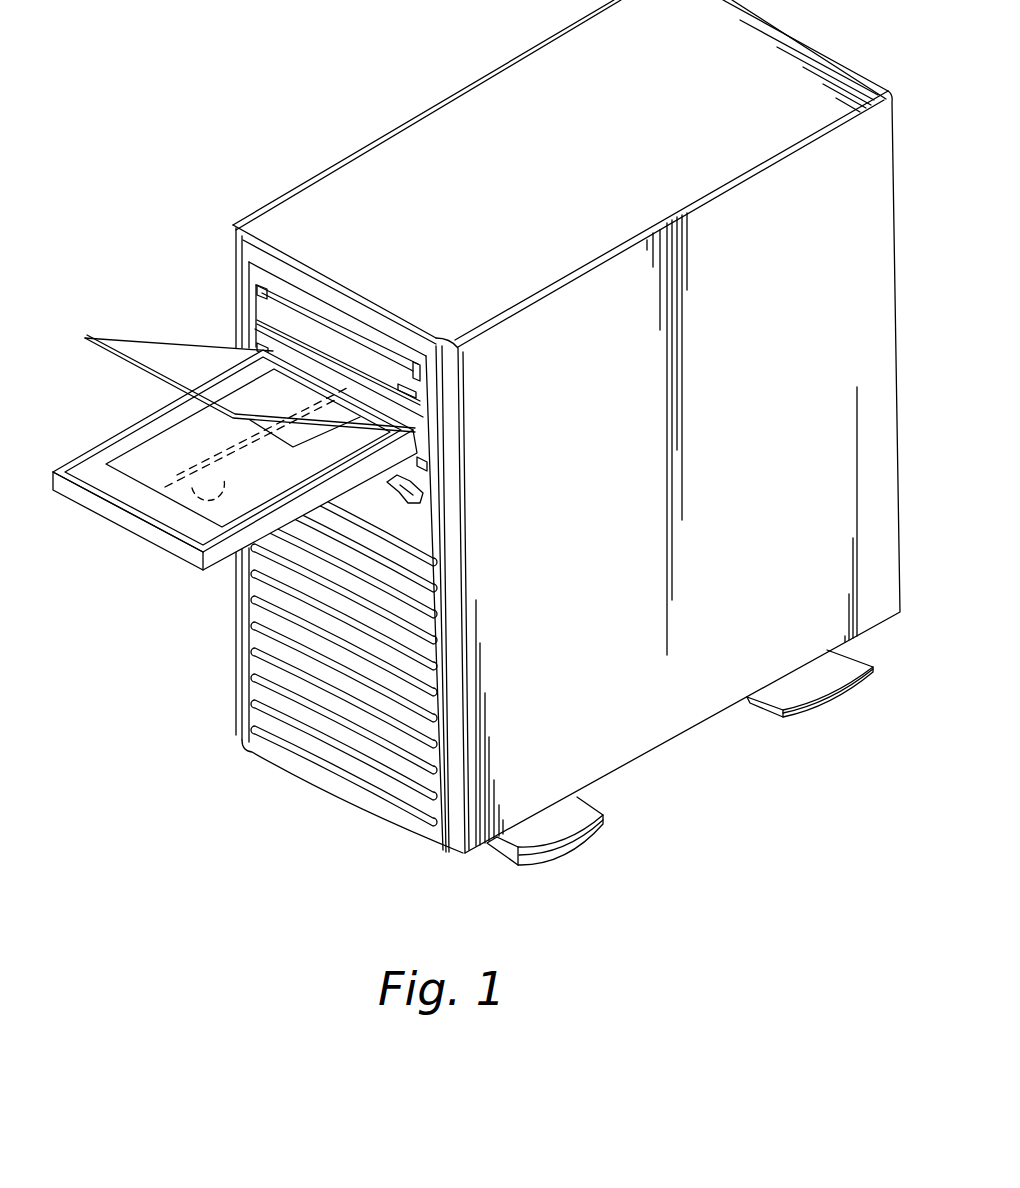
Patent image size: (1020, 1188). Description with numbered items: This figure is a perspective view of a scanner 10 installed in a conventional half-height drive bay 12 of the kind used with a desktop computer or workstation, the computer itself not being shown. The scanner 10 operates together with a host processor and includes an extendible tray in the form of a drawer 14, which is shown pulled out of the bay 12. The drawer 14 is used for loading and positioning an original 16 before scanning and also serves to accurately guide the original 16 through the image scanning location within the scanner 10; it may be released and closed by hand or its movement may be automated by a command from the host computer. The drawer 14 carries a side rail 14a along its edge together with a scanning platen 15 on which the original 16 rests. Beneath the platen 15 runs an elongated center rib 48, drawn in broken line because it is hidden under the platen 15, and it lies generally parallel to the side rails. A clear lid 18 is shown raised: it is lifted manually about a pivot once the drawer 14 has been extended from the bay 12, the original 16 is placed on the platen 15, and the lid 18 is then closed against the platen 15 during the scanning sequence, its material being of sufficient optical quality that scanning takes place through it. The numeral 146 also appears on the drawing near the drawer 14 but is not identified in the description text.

The disc drive 10 is at (260, 335).
The computer housing 12 is at (540, 432).
The disc cartridge 14 is at (219, 496).
The cartridge top surface 14a is at (90, 447).
The cartridge rim 15 is at (117, 488).
The cartridge recess 16 is at (157, 493).
The cover plate 18 is at (127, 337).
The hub 48 is at (195, 486).
The cartridge edge 146 is at (240, 552).